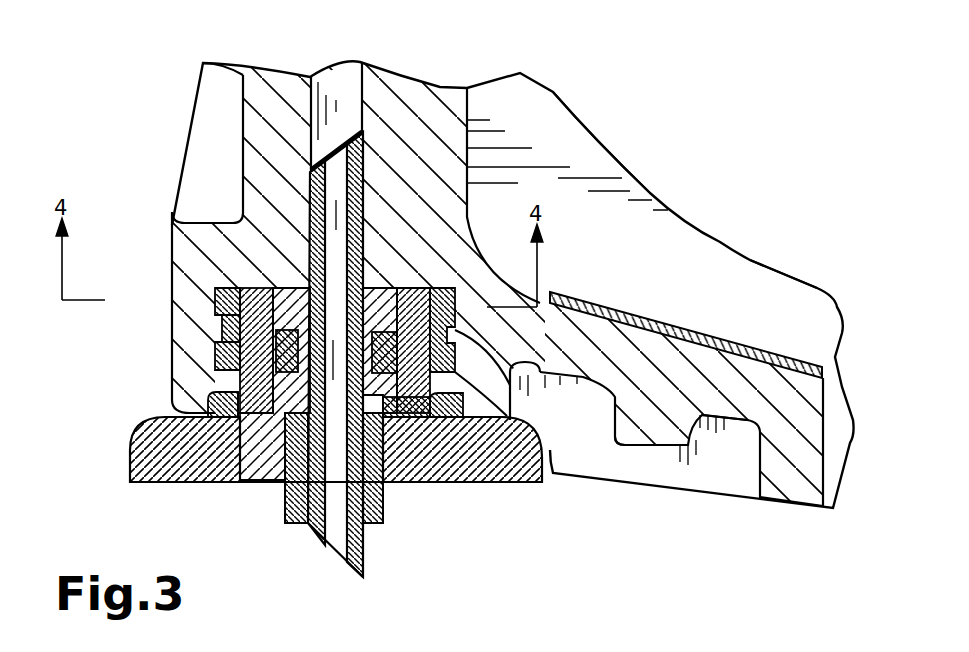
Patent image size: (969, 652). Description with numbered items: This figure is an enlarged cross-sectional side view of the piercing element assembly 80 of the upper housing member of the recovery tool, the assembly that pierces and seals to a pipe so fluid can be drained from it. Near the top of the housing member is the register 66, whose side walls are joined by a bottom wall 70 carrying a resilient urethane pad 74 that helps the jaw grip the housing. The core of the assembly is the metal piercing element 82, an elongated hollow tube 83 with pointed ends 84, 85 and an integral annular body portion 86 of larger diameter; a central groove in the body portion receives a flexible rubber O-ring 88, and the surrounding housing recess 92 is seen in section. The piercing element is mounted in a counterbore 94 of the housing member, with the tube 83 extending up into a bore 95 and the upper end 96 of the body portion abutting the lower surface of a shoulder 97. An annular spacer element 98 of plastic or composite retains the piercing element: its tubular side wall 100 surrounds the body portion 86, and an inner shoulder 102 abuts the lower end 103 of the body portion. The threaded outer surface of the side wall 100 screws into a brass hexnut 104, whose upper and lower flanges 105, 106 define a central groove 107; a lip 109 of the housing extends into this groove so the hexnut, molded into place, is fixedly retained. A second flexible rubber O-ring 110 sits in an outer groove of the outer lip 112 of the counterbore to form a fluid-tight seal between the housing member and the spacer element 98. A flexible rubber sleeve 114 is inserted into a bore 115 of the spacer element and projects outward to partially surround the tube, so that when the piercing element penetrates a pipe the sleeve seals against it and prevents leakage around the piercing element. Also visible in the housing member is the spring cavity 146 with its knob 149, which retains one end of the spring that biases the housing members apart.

The register 66 is at (688, 318).
The bottom wall 70 is at (820, 366).
The resilient urethane pad 74 is at (605, 307).
The piercing element assembly 80 is at (437, 508).
The piercing element 82 is at (358, 560).
The elongated hollow tube 83 is at (310, 252).
The pointed end 84 is at (333, 553).
The pointed end 85 is at (337, 160).
The annular body portion 86 is at (262, 483).
The O-ring 88 is at (212, 479).
The recess 92 is at (260, 100).
The counterbore 94 is at (215, 312).
The bore 95 is at (345, 80).
The upper end of body portion 96 is at (388, 290).
The shoulder 97 is at (393, 288).
The annular spacer element 98 is at (510, 483).
The tubular side wall 100 is at (463, 483).
The inner shoulder 102 is at (395, 483).
The lower end of body portion 103 is at (286, 490).
The hexnut 104 is at (215, 292).
The upper flange 105 is at (222, 318).
The lower flange 106 is at (208, 393).
The central groove 107 is at (276, 350).
The lip 109 is at (540, 365).
The O-ring 110 is at (217, 408).
The outer lip 112 is at (132, 444).
The flexible rubber sleeve 114 is at (295, 525).
The bore 115 is at (393, 525).
The spring cavity 146 is at (733, 470).
The knob 149 is at (670, 447).